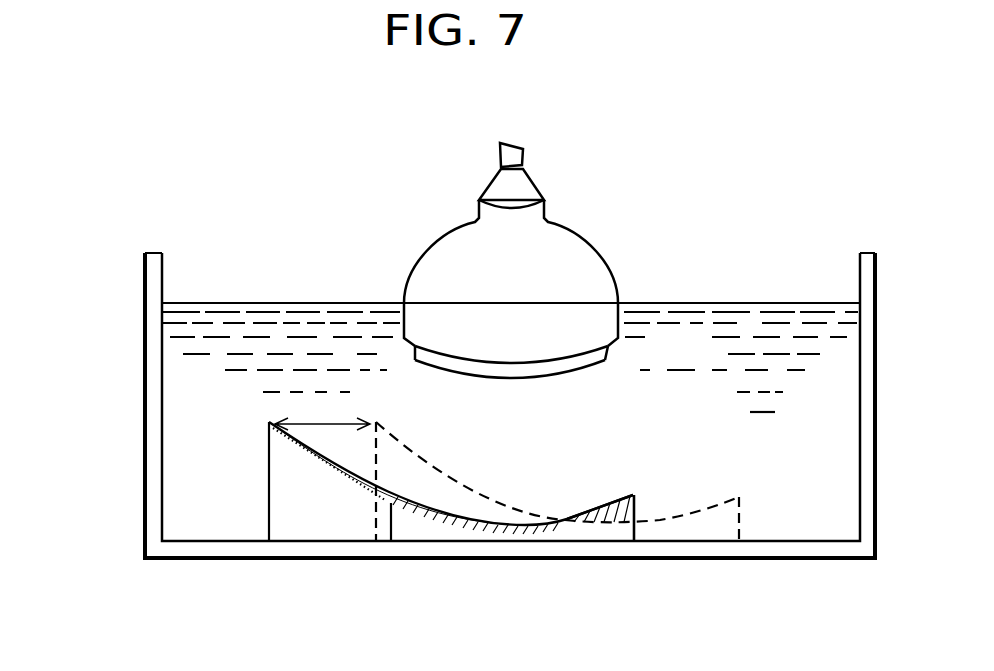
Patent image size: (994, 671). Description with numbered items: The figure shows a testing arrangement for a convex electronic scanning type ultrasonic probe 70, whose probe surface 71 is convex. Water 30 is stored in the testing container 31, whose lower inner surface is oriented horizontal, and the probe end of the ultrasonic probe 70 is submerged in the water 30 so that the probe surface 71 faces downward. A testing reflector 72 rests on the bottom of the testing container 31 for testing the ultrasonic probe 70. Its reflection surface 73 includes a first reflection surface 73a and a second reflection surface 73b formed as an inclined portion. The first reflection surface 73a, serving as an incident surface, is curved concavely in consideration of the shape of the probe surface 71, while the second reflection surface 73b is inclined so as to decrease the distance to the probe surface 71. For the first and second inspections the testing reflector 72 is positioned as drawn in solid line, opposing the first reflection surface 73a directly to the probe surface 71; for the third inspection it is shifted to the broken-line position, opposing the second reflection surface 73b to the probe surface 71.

The water 30 is at (757, 312).
The testing container 31 is at (145, 283).
The ultrasonic probe 70 is at (587, 240).
The probe surface 71 is at (590, 370).
The testing reflector 72 is at (318, 527).
The reflection surface 73 is at (430, 427).
The first reflection surface 73a is at (565, 518).
The second reflection surface 73b is at (378, 488).